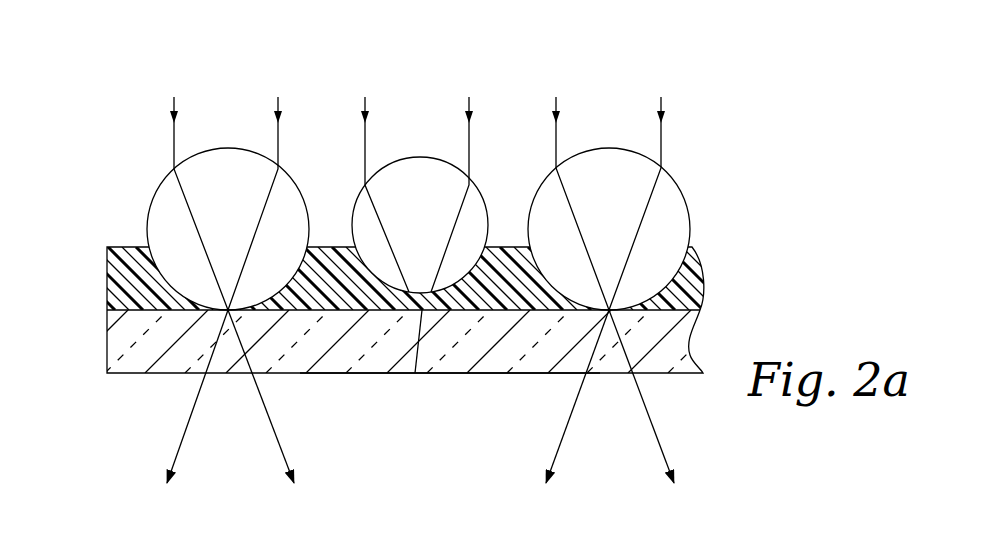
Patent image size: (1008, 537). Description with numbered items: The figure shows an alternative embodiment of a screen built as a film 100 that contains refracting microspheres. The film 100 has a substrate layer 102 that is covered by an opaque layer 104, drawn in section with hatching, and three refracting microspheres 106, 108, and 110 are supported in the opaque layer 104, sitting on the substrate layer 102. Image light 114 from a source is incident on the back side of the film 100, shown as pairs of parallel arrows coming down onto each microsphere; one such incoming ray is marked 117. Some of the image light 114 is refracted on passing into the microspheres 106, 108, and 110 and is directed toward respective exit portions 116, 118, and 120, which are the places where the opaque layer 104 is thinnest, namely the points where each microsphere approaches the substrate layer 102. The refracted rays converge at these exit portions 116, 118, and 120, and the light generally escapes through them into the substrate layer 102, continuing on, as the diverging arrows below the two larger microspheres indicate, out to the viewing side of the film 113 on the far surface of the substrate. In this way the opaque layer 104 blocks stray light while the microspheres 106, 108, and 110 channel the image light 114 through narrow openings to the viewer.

The film 100 is at (698, 92).
The substrate layer 102 is at (672, 343).
The opaque layer 104 is at (695, 288).
The refracting microsphere 106 is at (672, 192).
The refracting microsphere 108 is at (408, 180).
The refracting microsphere 110 is at (172, 195).
The viewing side of the film 113 is at (457, 373).
The image light 114 is at (277, 105).
The exit portion 116 is at (630, 318).
The incident light ray 117 is at (363, 136).
The exit portion 118 is at (415, 373).
The exit portion 120 is at (227, 312).